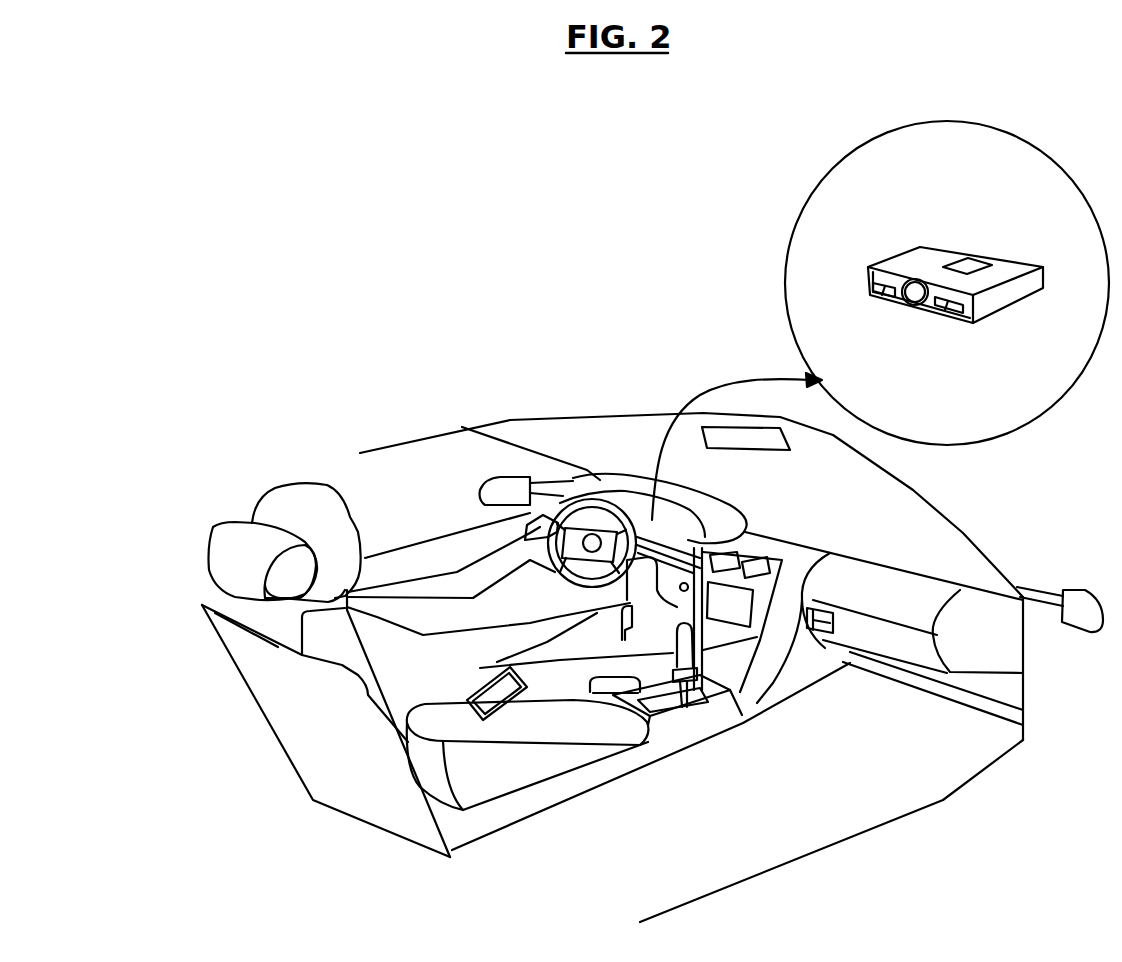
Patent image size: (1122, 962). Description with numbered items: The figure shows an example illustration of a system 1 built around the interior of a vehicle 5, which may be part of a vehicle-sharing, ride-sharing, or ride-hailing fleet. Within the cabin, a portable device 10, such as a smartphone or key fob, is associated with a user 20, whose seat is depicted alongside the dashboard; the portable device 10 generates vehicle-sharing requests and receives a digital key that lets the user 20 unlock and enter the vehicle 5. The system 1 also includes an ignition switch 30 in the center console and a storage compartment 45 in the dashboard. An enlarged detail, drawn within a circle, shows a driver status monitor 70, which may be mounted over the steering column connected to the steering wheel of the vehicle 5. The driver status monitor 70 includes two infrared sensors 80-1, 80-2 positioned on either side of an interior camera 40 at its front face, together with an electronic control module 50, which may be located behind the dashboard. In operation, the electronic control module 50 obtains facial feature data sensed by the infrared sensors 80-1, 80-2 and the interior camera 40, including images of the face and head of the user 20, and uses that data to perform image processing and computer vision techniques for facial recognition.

The system 1 is at (304, 285).
The vehicle 5 is at (510, 420).
The portable device 10 is at (478, 687).
The user 20 is at (278, 485).
The ignition switch 30 is at (676, 620).
The interior camera 40 is at (912, 307).
The storage compartment 45 is at (856, 652).
The electronic control module 50 is at (977, 260).
The driver status monitor 70 is at (783, 247).
The infrared sensor 80-1 is at (890, 300).
The infrared sensor 80-2 is at (942, 315).